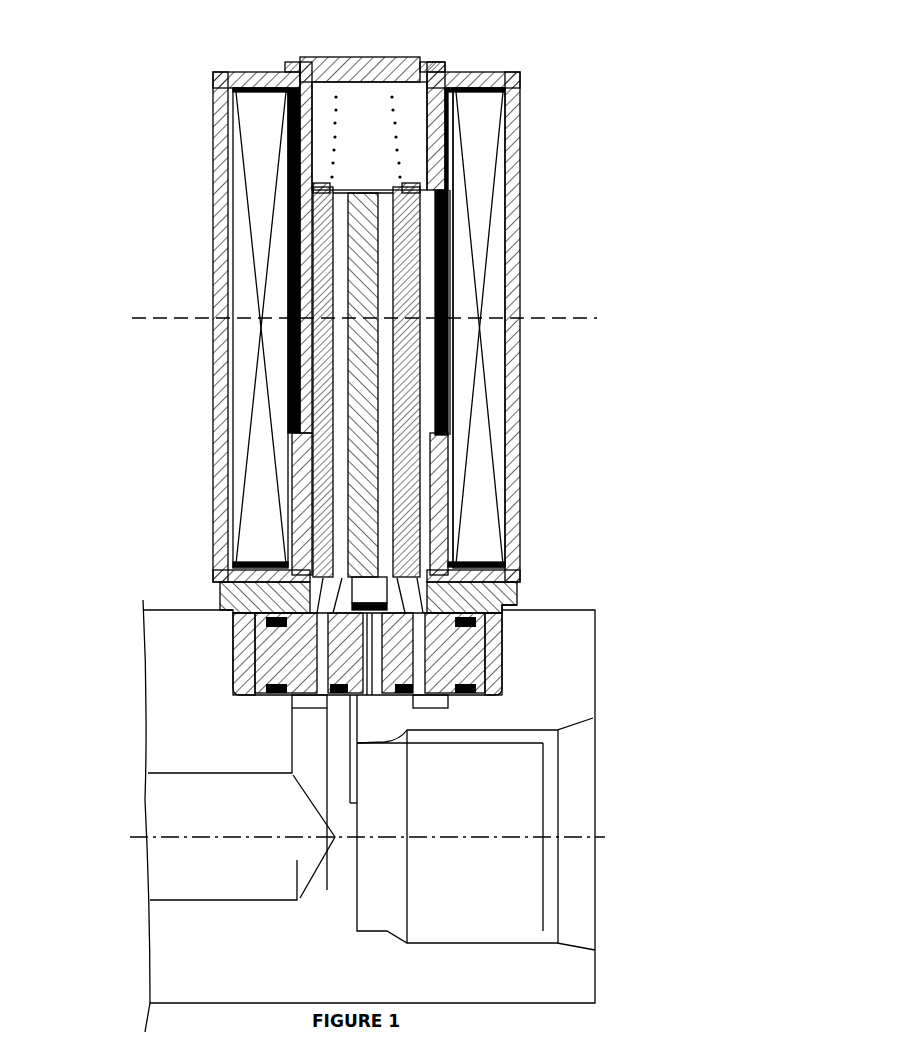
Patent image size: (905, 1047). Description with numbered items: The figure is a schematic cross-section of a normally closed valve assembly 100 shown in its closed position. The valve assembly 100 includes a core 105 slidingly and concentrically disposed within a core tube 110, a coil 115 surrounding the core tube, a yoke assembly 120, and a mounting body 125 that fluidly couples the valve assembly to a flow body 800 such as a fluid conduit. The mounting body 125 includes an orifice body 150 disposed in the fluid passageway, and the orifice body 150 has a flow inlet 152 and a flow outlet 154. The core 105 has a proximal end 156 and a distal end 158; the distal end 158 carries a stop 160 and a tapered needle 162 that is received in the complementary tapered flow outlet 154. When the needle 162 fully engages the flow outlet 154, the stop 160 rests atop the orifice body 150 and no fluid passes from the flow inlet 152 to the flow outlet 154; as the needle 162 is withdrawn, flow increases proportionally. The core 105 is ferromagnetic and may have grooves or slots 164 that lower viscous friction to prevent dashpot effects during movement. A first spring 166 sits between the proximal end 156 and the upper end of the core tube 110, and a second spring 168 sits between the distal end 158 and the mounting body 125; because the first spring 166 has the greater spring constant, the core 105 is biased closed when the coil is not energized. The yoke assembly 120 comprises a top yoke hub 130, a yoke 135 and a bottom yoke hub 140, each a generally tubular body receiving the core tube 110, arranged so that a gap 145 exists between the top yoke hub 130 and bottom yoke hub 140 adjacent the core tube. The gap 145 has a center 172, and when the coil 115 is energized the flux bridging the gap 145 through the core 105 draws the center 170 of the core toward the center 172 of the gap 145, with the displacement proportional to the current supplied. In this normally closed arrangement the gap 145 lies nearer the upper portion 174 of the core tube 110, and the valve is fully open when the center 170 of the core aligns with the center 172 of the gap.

The valve assembly 100 is at (532, 48).
The core 105 is at (366, 185).
The core tube 110 is at (420, 57).
The coil 115 is at (262, 243).
The yoke assembly 120 is at (212, 140).
The mounting body 125 is at (228, 598).
The top yoke hub 130 is at (293, 68).
The yoke 135 is at (213, 410).
The bottom yoke hub 140 is at (325, 518).
The gap 145 is at (507, 300).
The orifice body 150 is at (250, 694).
The flow inlet 152 is at (312, 698).
The flow outlet 154 is at (372, 697).
The proximal end 156 is at (340, 109).
The distal end 158 is at (262, 610).
The stop 160 is at (378, 595).
The needle 162 is at (387, 642).
The grooves or slots 164 is at (325, 465).
The first spring 166 is at (392, 108).
The second spring 168 is at (500, 618).
The center of the core 170 is at (296, 420).
The center of the gap 172 is at (132, 318).
The upper portion of the core tube 174 is at (334, 70).
The flow body 800 is at (200, 698).